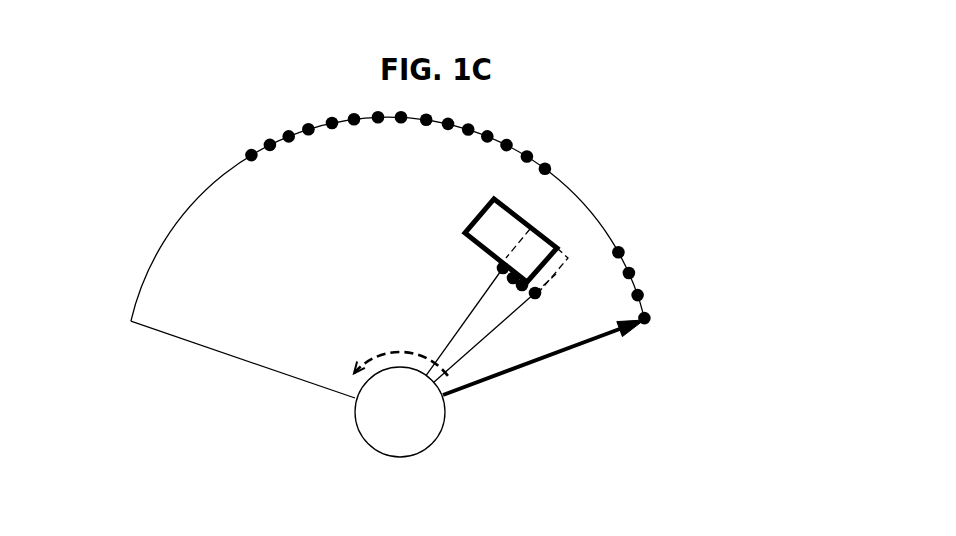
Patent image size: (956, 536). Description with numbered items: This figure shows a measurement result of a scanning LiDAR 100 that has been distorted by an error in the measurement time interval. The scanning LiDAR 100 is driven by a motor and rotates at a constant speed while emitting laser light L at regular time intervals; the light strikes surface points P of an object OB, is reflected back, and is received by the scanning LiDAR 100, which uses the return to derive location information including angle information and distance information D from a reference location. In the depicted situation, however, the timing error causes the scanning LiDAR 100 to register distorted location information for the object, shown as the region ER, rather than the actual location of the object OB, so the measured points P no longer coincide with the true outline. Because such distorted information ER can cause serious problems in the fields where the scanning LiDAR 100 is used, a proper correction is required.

The scanning LiDAR 100 is at (448, 412).
The object OB is at (527, 217).
The distorted location information related to an object ER is at (567, 257).
The surface point P is at (538, 291).
The distance information D is at (449, 343).
The laser light L is at (577, 348).